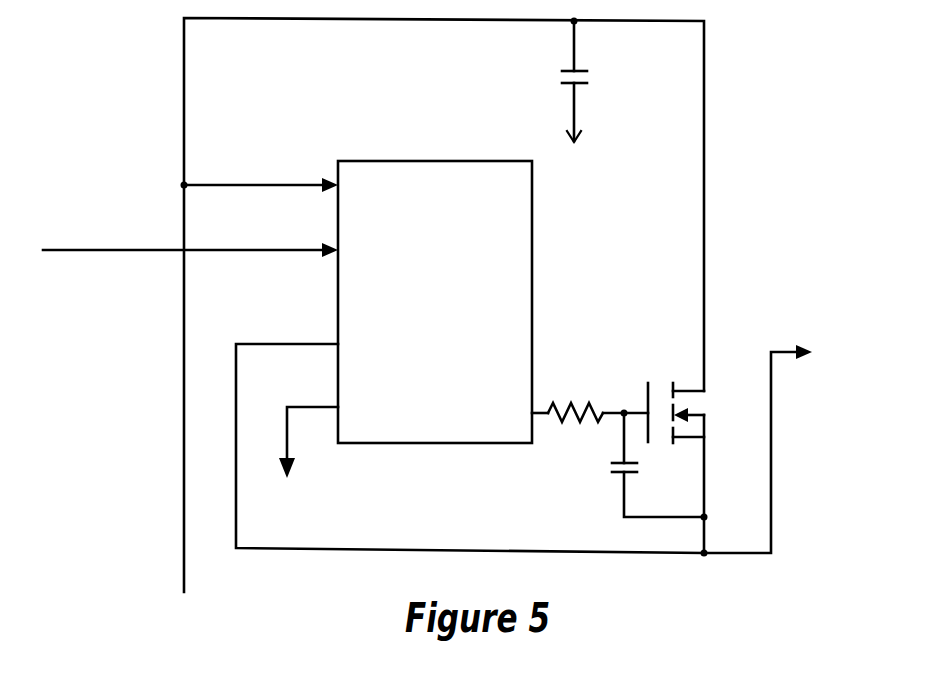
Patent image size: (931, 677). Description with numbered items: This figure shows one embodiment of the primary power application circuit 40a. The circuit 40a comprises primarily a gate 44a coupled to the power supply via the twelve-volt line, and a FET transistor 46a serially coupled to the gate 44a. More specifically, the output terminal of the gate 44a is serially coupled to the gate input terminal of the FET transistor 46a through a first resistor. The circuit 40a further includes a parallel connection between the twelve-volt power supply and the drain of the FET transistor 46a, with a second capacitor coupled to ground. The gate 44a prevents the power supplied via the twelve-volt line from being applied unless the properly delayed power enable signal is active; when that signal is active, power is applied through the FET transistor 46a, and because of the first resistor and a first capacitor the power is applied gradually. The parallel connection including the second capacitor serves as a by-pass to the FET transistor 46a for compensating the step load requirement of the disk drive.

The primary power application circuit 40a is at (783, 98).
The gate 44a is at (532, 246).
The FET transistor 46a is at (668, 382).